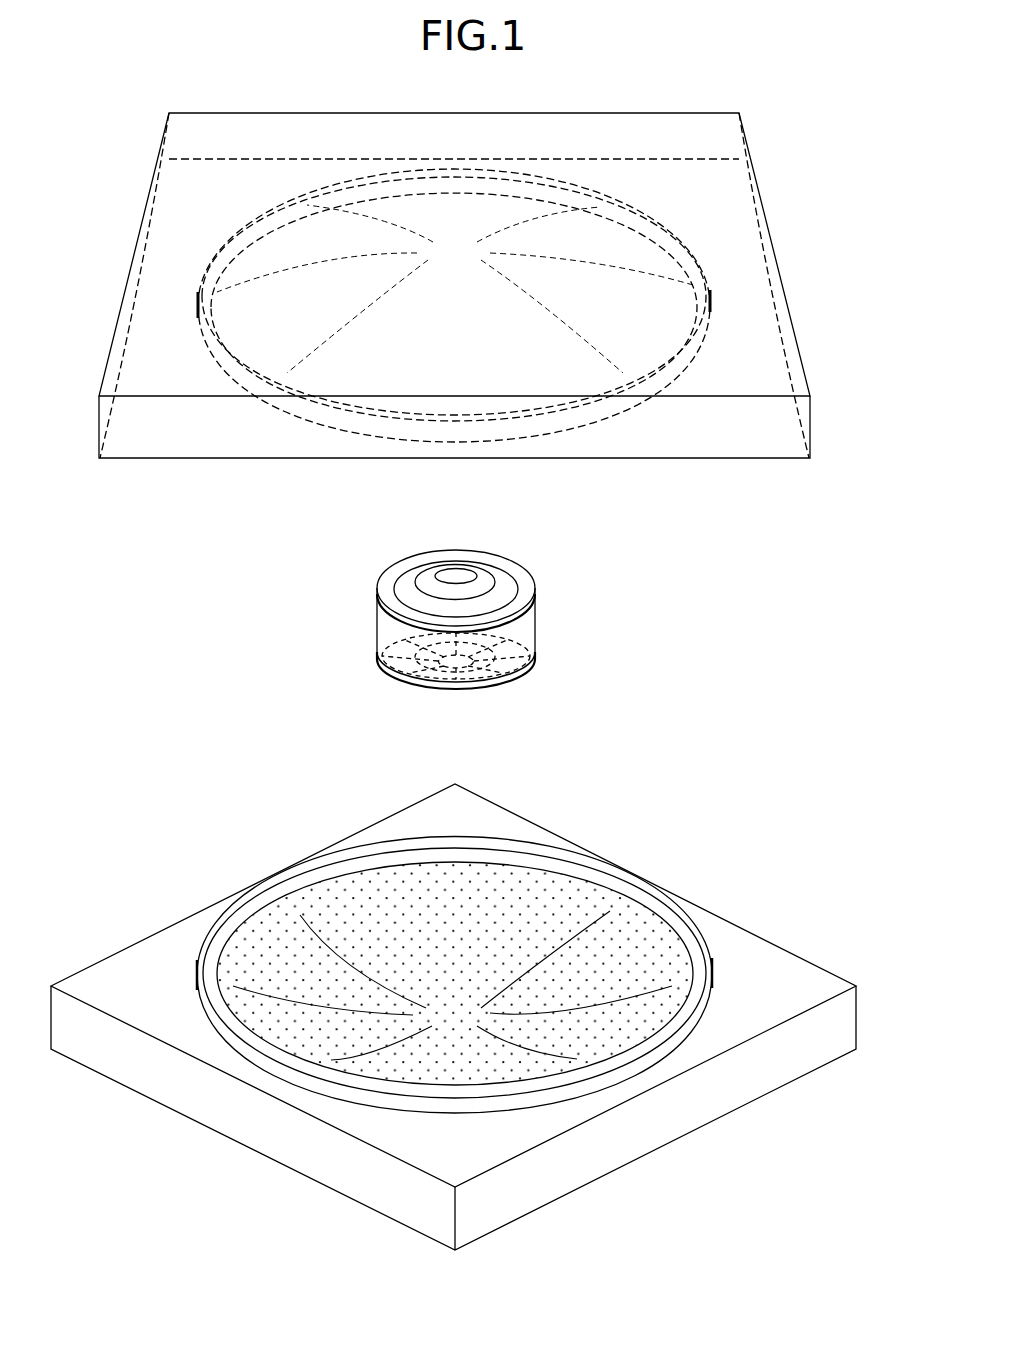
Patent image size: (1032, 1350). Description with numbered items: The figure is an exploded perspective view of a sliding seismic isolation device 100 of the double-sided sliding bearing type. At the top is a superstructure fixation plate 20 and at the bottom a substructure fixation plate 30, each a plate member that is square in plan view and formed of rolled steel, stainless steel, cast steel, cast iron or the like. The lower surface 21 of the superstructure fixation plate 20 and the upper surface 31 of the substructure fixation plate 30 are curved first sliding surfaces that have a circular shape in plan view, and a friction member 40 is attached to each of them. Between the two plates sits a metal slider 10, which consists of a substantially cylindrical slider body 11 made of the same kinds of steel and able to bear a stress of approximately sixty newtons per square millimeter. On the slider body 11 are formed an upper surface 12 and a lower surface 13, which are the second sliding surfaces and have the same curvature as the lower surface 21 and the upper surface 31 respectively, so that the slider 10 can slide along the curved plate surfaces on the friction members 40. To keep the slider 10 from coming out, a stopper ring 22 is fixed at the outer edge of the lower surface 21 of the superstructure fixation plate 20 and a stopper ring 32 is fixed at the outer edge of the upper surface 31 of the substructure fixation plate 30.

The sliding seismic isolation device 100 is at (135, 642).
The slider 10 is at (518, 625).
The slider body 11 is at (530, 623).
The upper surface 12 is at (497, 569).
The lower surface 13 is at (488, 685).
The superstructure fixation plate 20 is at (718, 147).
The lower surface 21 is at (653, 216).
The stopper ring 22 is at (697, 350).
The substructure fixation plate 30 is at (756, 1073).
The upper surface 31 is at (572, 917).
The stopper ring 32 is at (572, 858).
The friction member 40 is at (693, 278).